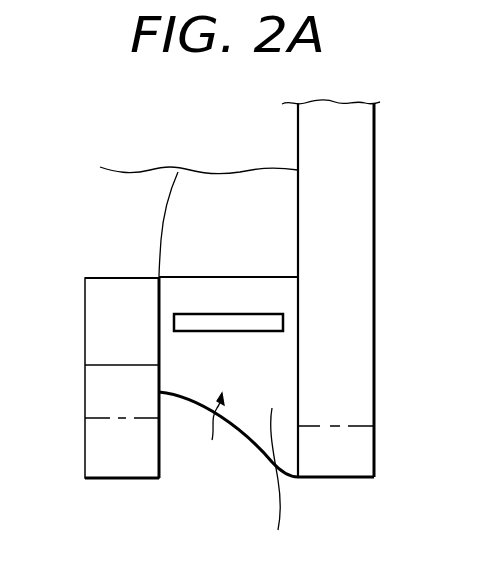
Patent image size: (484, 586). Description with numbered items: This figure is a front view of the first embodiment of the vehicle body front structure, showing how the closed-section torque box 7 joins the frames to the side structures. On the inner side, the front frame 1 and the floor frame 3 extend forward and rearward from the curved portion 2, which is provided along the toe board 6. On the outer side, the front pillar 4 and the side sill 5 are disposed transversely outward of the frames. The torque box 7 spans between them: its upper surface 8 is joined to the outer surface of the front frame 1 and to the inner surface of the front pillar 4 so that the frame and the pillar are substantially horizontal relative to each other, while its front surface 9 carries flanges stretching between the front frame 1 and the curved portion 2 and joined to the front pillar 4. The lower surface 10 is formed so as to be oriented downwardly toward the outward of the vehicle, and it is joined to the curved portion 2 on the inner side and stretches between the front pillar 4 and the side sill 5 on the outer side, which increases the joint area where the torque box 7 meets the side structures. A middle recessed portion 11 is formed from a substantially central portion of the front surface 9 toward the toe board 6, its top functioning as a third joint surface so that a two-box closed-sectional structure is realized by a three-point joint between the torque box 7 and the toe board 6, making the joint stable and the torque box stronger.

The front frame 1 is at (118, 293).
The curved portion 2 is at (106, 390).
The floor frame 3 is at (96, 451).
The front pillar 4 is at (360, 229).
The side sill 5 is at (378, 458).
The toe board 6 is at (240, 176).
The torque box 7 is at (214, 430).
The upper surface 8 is at (238, 277).
The front surface 9 is at (272, 485).
The lower surface 10 is at (238, 435).
The middle recessed portion 11 is at (205, 325).